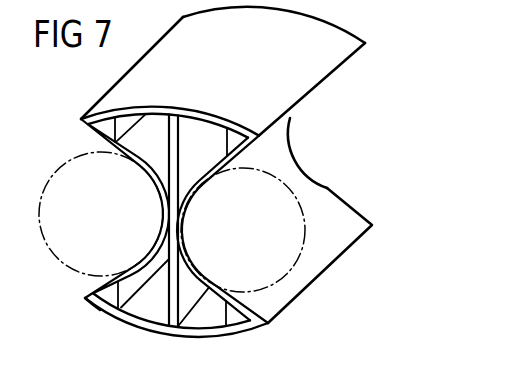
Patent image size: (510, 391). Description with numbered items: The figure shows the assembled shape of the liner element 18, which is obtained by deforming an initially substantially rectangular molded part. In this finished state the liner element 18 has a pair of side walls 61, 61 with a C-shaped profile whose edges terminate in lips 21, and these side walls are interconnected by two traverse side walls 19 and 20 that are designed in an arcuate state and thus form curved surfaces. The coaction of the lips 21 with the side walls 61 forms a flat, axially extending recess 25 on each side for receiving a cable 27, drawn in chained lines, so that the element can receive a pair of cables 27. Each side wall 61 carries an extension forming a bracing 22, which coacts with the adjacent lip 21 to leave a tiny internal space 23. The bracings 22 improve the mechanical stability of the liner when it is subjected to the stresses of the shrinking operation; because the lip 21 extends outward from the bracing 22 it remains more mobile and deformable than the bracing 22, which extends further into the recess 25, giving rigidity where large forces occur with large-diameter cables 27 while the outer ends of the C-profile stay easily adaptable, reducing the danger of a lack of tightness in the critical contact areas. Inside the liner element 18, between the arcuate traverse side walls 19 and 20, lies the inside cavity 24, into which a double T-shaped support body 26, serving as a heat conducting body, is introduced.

The liner element 18 is at (313, 115).
The traverse side wall 19 is at (313, 20).
The traverse side wall 20 is at (158, 330).
The lip 21 is at (86, 299).
The bracing 22 is at (119, 306).
The internal space 23 is at (110, 299).
The inside cavity 24 is at (148, 138).
The recess 25 is at (326, 188).
The double T-shaped support body 26 is at (204, 318).
The cable 27 is at (320, 238).
The side wall 61 is at (148, 178).